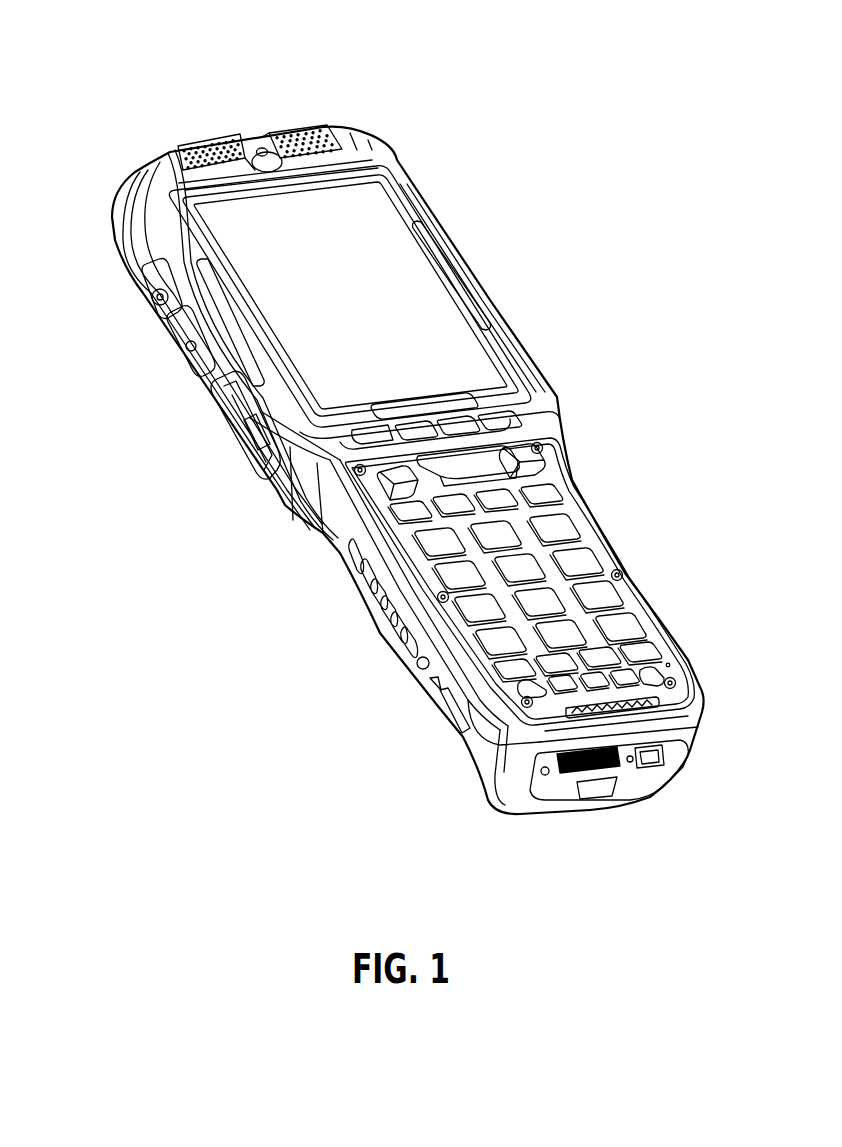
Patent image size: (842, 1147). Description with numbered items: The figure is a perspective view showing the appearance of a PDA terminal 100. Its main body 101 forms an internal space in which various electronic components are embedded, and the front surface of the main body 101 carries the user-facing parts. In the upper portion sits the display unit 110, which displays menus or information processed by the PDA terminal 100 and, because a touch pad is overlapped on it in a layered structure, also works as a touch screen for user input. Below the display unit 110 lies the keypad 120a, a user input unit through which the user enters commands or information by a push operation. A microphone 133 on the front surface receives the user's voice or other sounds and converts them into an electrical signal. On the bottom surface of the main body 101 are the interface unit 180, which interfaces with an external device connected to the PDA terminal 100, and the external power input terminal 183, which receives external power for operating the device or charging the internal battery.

The PDA terminal 100 is at (397, 87).
The main body 101 is at (118, 200).
The display unit 110 is at (382, 292).
The keypad 120a is at (570, 481).
The microphone 133 is at (669, 662).
The interface unit 180 is at (557, 768).
The external power input terminal 183 is at (665, 760).